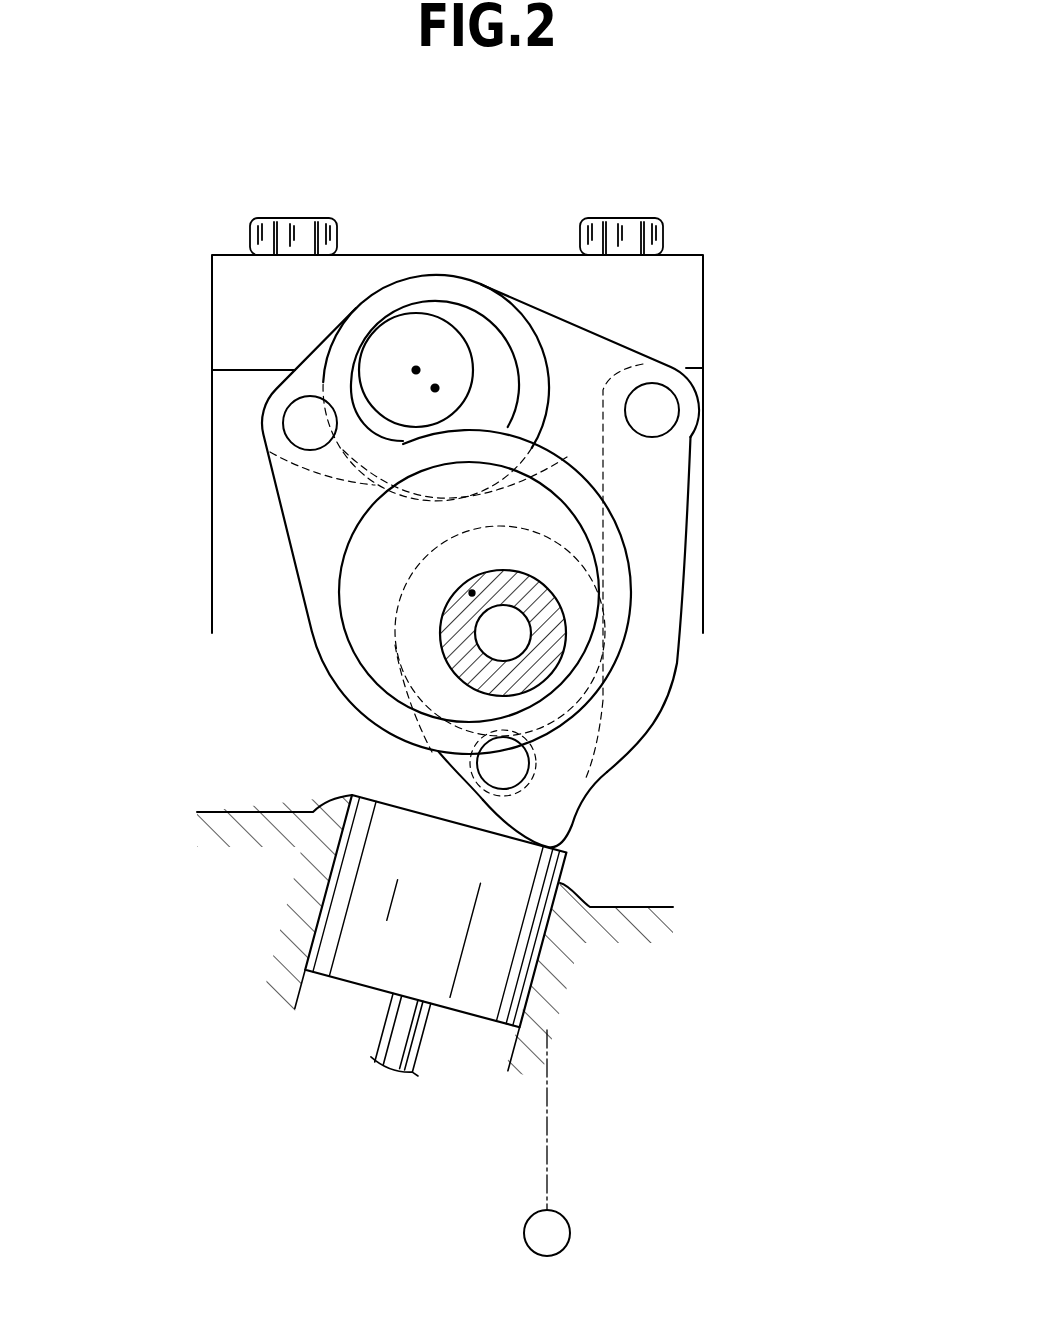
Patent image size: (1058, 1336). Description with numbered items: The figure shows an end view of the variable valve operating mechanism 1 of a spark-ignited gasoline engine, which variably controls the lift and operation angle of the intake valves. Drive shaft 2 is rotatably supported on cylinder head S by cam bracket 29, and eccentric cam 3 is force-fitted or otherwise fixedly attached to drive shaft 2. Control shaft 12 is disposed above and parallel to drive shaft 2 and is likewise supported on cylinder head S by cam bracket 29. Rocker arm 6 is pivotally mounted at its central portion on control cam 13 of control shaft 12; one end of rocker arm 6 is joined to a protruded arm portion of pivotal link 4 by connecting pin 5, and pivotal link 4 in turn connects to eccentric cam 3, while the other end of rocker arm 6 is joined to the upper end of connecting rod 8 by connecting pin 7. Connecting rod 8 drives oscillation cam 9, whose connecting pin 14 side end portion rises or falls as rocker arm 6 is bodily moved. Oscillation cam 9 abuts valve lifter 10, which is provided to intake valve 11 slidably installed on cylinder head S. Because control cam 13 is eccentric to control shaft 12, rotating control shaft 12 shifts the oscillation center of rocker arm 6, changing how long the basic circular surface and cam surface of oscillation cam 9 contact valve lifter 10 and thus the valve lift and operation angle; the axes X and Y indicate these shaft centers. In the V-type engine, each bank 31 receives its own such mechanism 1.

The variable valve operating mechanism 1 is at (748, 432).
The drive shaft 2 is at (615, 664).
The eccentric cam 3 is at (375, 668).
The pivotal link 4 is at (340, 652).
The connecting pin 5 is at (305, 426).
The rocker arm 6 is at (317, 363).
The connecting pin 7 is at (652, 412).
The connecting rod 8 is at (657, 588).
The oscillation cam 9 is at (560, 823).
The valve lifter 10 is at (360, 930).
The intake valve 11 is at (395, 1020).
The control shaft 12 is at (397, 340).
The control cam 13 is at (493, 360).
The connecting pin 14 is at (512, 764).
The cam bracket 29 is at (705, 345).
The bank 31 is at (570, 1233).
The axis X is at (450, 607).
The axis Y is at (508, 633).
The cylinder head S is at (563, 970).